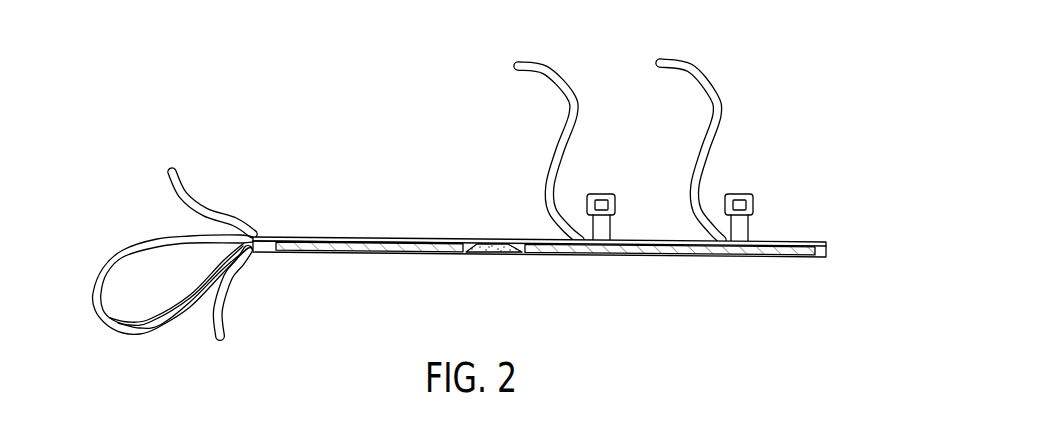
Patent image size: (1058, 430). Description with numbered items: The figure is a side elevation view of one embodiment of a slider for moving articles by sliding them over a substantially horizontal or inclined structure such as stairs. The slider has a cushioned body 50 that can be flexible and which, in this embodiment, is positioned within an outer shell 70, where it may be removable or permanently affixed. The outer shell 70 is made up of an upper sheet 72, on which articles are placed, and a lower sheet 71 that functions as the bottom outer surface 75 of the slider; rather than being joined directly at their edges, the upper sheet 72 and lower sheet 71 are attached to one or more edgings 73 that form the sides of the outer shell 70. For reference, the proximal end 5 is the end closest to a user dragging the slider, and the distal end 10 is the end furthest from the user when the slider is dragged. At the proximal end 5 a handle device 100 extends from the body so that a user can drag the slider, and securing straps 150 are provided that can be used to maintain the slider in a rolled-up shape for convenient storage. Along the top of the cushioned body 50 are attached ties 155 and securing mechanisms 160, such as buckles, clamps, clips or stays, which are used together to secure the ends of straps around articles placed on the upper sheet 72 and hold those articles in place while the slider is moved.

The proximal end 5 is at (539, 236).
The distal end 10 is at (560, 236).
The cushioned body 50 is at (495, 255).
The outer shell 70 is at (365, 236).
The lower sheet 71 is at (420, 253).
The upper sheet 72 is at (455, 236).
The edging 73 is at (670, 278).
The bottom outer surface 75 is at (768, 257).
The handle device 100 is at (150, 240).
The securing strap 150 is at (187, 193).
The tie 155 is at (568, 93).
The securing mechanism 160 is at (600, 193).